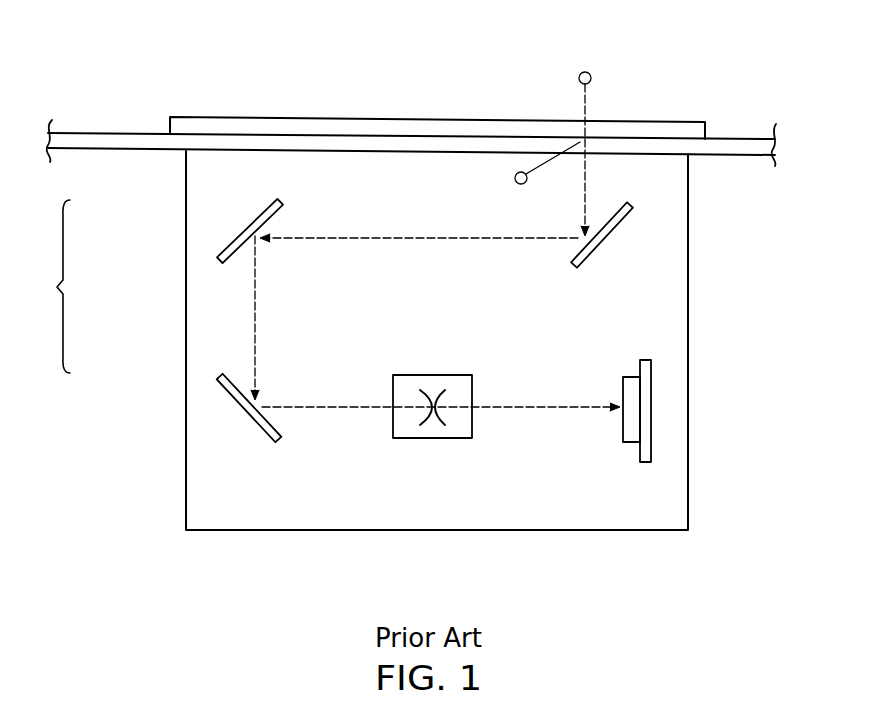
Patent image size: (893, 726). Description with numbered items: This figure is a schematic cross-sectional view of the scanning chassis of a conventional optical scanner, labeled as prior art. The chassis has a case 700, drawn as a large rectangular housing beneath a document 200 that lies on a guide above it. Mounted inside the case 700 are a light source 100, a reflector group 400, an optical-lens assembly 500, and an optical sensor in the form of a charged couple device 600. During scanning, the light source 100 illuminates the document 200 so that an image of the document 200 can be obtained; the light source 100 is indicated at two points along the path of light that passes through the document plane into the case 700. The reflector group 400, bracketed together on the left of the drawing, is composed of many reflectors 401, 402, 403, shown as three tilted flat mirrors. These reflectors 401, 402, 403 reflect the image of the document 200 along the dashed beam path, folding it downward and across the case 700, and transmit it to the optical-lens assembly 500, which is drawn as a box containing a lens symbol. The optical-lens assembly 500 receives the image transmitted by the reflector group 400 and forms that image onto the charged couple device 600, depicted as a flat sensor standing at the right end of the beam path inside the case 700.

The light source 100 is at (521, 172).
The document 200 is at (673, 122).
The reflector group 400 is at (40, 286).
The reflector 401 is at (576, 263).
The reflector 402 is at (248, 229).
The reflector 403 is at (222, 378).
The optical-lens assembly 500 is at (440, 438).
The charged couple device 600 is at (652, 388).
The case 700 is at (688, 470).